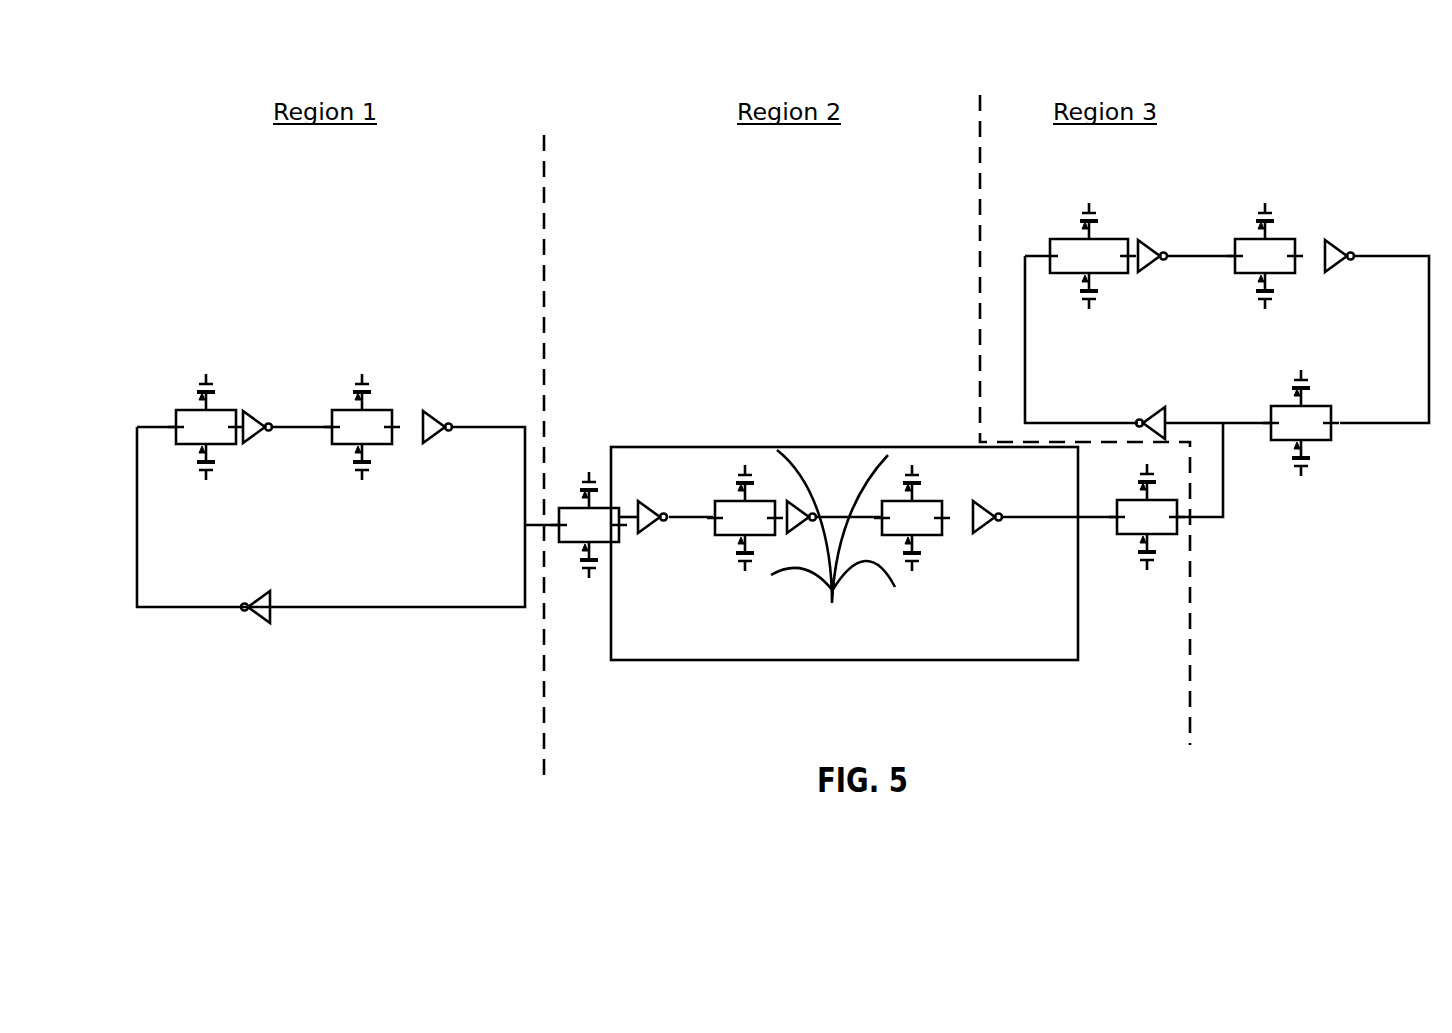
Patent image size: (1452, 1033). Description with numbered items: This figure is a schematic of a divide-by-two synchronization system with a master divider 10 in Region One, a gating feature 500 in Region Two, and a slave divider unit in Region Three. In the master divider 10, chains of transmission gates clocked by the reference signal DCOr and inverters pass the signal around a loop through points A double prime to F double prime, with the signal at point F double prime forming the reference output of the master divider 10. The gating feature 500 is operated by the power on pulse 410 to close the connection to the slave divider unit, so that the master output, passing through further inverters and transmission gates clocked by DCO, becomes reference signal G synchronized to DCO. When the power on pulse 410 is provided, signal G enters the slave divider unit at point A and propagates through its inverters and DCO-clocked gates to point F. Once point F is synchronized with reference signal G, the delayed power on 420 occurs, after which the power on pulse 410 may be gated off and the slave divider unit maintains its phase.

The master divider 10 is at (148, 353).
The power on pulse 410 is at (558, 447).
The delayed power on 420 is at (1309, 406).
The gating feature 500 is at (675, 447).